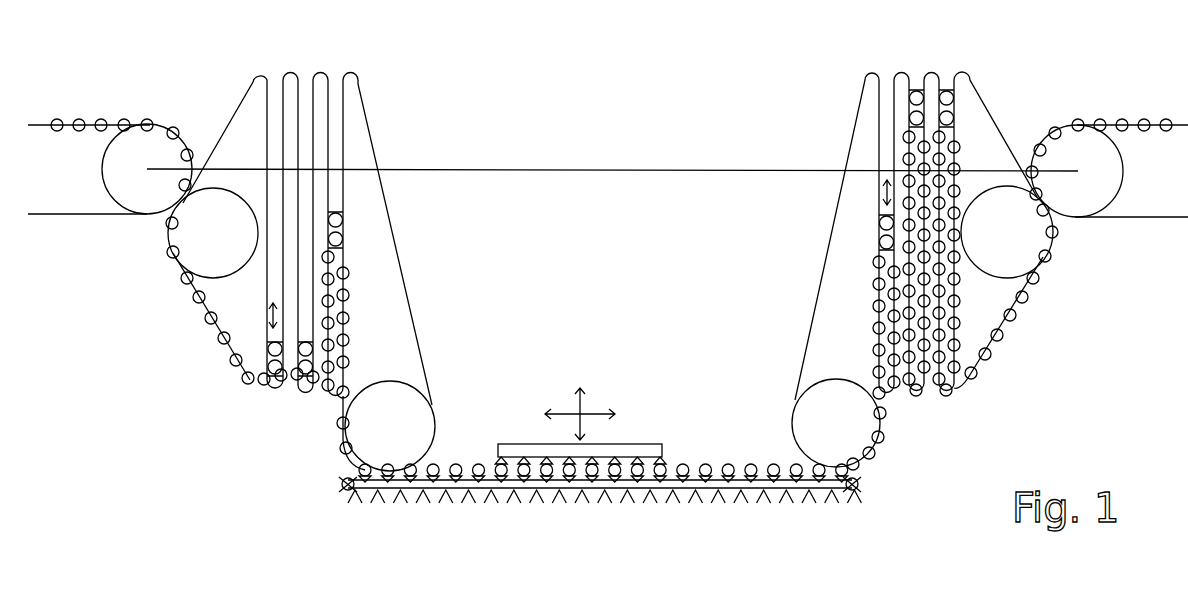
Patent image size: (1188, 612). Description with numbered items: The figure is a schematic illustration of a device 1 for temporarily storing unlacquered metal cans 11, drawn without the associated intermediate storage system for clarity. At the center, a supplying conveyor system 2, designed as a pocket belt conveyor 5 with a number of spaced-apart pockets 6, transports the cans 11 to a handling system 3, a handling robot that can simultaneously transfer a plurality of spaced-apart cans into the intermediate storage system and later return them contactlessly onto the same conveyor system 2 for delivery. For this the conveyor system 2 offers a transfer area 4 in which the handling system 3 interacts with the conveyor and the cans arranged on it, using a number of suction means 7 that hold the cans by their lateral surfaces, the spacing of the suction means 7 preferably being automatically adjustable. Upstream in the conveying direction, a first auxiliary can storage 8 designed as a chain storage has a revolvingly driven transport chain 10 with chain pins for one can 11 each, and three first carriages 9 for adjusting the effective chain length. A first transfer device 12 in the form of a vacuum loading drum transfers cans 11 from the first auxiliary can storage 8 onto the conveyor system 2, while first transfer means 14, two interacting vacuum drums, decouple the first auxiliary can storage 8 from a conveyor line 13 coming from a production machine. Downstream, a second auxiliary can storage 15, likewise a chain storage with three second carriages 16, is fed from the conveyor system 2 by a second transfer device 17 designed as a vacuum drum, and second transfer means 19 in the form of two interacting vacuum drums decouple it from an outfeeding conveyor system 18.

The device 1 is at (632, 538).
The conveyor system 2 is at (683, 470).
The handling system 3 is at (610, 452).
The transfer area 4 is at (545, 525).
The pocket belt conveyor 5 is at (435, 492).
The pockets 6 is at (458, 475).
The suction means 7 is at (505, 458).
The first auxiliary can storage 8 is at (930, 415).
The first carriages 9 is at (917, 90).
The transport chain 10 is at (822, 283).
The cans 11 is at (980, 373).
The first transfer device 12 is at (873, 450).
The conveyor line 13 is at (1105, 133).
The first transfer means 14 is at (1081, 244).
The second auxiliary can storage 15 is at (328, 78).
The second carriages 16 is at (273, 382).
The second transfer device 17 is at (408, 412).
The outfeeding conveyor system 18 is at (28, 131).
The second transfer means 19 is at (139, 262).